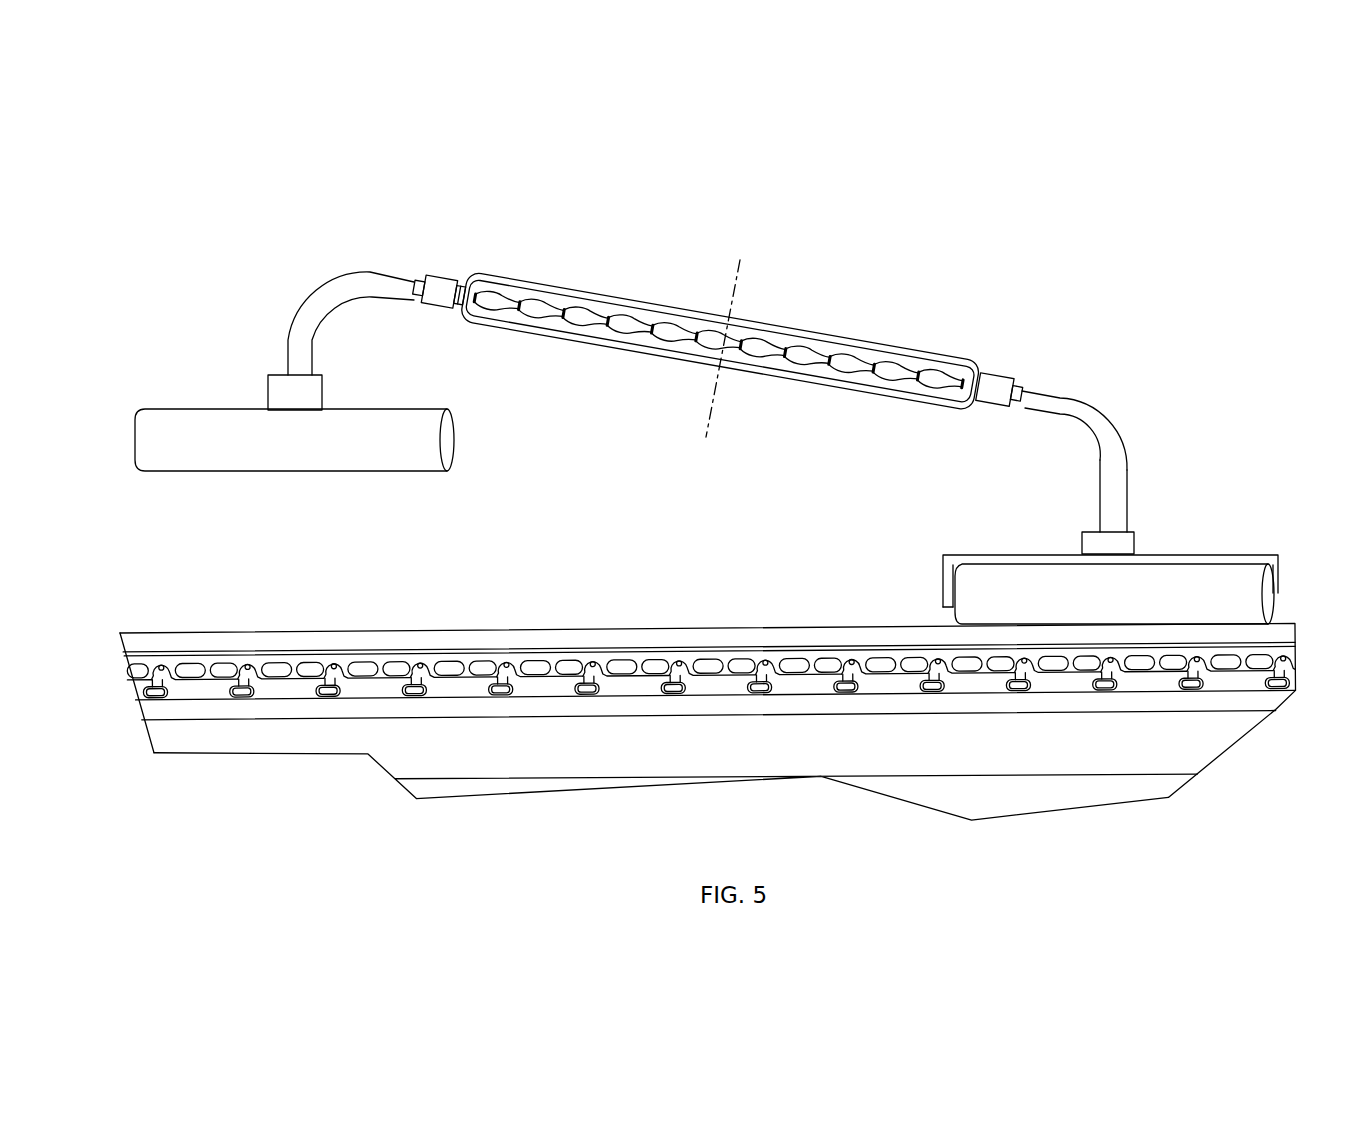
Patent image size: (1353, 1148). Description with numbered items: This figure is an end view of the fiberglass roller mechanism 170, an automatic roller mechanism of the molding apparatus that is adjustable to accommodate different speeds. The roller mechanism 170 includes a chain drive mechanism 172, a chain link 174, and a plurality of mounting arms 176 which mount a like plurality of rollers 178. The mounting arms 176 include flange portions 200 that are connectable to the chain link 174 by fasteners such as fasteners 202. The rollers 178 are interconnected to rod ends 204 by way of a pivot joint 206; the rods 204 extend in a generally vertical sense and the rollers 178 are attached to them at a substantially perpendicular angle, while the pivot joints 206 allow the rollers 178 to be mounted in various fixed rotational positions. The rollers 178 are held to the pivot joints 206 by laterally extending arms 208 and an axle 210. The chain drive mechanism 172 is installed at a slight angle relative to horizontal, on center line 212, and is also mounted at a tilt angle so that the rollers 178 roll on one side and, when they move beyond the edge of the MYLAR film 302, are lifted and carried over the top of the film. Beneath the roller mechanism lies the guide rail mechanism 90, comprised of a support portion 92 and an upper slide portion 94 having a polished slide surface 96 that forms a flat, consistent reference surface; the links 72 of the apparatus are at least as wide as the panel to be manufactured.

The roller mechanism 170 is at (863, 267).
The chain drive mechanism 172 is at (503, 275).
The chain link 174 is at (637, 308).
The mounting arms 176 is at (305, 323).
The rollers 178 is at (390, 432).
The flange portions 200 is at (1005, 387).
The fasteners 202 is at (1077, 416).
The rod ends 204 is at (1118, 499).
The pivot joint 206 is at (302, 397).
The laterally extending arms 208 is at (950, 585).
The axle 210 is at (955, 617).
The center line 212 is at (713, 408).
The links 72 is at (790, 684).
The MYLAR film 302 is at (908, 672).
The upper slide portion 94 is at (1060, 700).
The support portion 92 is at (292, 737).
The slide surface 96 is at (620, 693).
The guide rail mechanism 90 is at (812, 777).